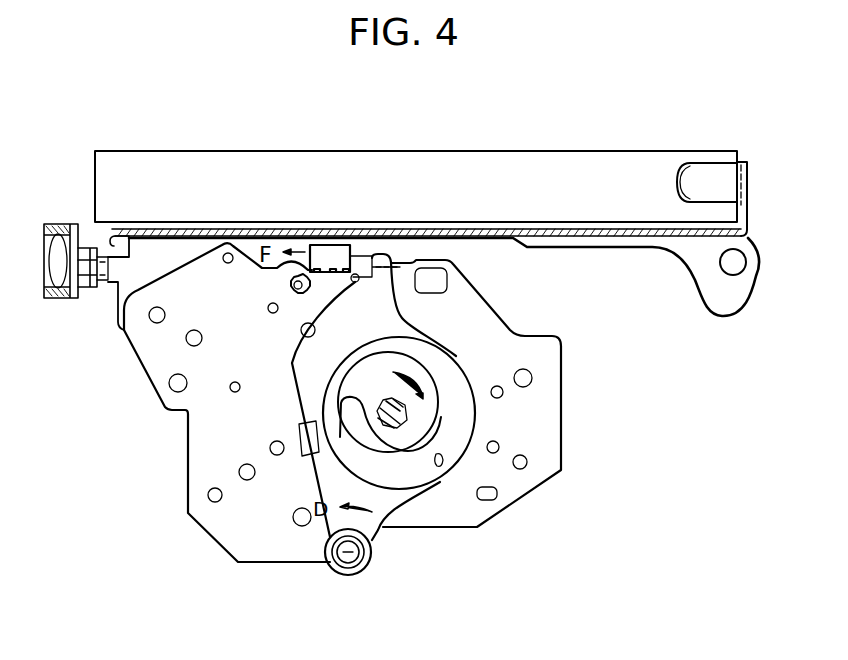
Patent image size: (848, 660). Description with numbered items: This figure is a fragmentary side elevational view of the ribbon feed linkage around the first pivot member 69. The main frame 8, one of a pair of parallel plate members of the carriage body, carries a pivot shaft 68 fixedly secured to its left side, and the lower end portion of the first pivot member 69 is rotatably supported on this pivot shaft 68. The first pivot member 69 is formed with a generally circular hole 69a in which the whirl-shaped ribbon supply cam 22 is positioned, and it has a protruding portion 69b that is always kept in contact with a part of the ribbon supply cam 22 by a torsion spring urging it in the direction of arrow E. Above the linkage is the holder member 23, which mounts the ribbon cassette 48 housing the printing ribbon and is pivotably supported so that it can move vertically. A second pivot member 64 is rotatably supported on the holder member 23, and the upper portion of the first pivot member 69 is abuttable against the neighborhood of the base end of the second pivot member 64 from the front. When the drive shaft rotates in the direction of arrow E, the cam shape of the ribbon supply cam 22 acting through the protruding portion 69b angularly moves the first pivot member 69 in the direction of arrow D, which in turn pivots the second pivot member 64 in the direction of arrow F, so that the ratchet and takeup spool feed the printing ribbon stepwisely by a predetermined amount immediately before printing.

The ribbon cassette 48 is at (588, 163).
The second pivot member 64 is at (330, 256).
The first pivot member 69 is at (415, 411).
The holder member 23 is at (697, 267).
The ribbon supply cam 22 is at (437, 405).
The main frame 8 is at (540, 444).
The protruding portion 69b is at (322, 396).
The circular hole 69a is at (439, 466).
The pivot shaft 68 is at (372, 557).